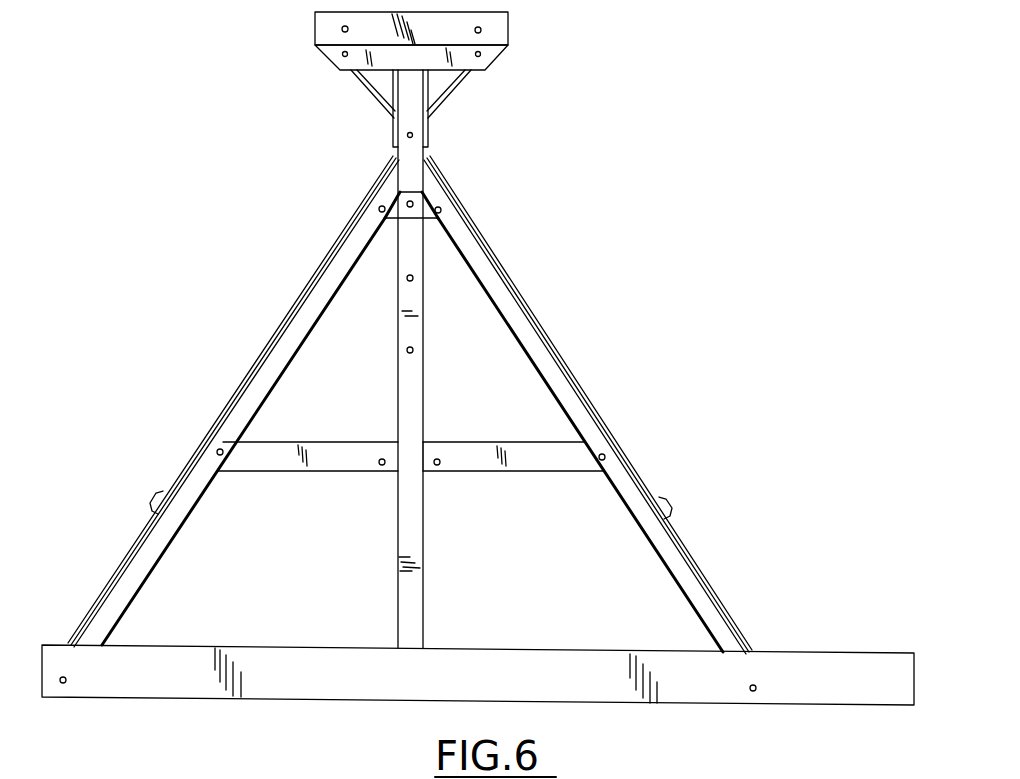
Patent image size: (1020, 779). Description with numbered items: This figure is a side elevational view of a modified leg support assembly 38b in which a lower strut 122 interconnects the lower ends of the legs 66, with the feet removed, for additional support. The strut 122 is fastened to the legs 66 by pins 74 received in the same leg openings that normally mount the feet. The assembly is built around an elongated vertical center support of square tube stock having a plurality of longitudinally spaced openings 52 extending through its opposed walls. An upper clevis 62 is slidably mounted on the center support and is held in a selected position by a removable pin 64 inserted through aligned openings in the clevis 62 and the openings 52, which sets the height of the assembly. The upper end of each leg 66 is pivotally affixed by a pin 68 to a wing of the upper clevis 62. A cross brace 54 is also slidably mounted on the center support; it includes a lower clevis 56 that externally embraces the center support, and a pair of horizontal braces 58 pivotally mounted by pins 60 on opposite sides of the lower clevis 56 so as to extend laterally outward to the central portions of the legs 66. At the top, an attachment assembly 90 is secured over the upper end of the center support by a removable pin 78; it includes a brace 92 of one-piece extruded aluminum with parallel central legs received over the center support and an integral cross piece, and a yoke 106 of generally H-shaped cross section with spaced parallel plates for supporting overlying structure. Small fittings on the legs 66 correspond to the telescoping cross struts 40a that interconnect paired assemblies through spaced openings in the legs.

The yoke 106 is at (503, 33).
The attachment assembly 90 is at (514, 60).
The brace 92 is at (452, 95).
The removable pin 78 is at (414, 135).
The openings 52 is at (408, 347).
The upper clevis 62 is at (424, 206).
The removable pin 64 is at (406, 203).
The pin 68 is at (378, 209).
The legs 66 is at (272, 352).
The modified leg support assembly 38b is at (647, 340).
The cross brace 54 is at (488, 431).
The lower clevis 56 is at (414, 462).
The horizontal braces 58 is at (299, 462).
The pins 60 is at (380, 459).
The telescoping cross struts 40a is at (150, 511).
The strut 122 is at (513, 658).
The pins 74 is at (64, 684).